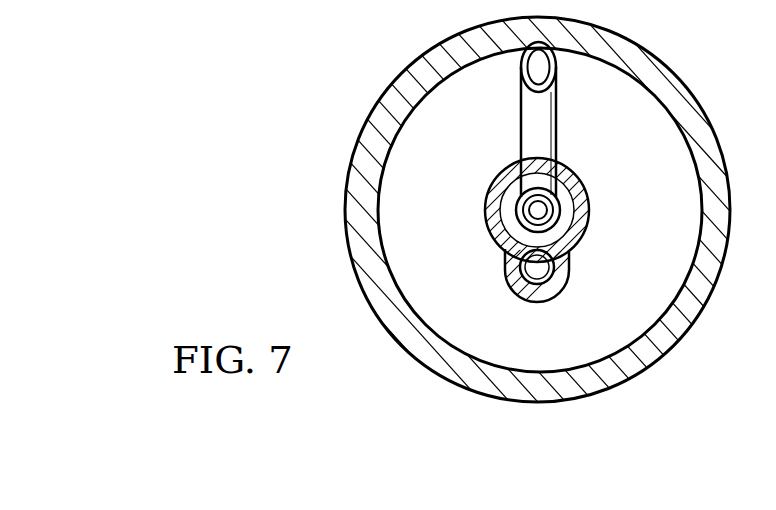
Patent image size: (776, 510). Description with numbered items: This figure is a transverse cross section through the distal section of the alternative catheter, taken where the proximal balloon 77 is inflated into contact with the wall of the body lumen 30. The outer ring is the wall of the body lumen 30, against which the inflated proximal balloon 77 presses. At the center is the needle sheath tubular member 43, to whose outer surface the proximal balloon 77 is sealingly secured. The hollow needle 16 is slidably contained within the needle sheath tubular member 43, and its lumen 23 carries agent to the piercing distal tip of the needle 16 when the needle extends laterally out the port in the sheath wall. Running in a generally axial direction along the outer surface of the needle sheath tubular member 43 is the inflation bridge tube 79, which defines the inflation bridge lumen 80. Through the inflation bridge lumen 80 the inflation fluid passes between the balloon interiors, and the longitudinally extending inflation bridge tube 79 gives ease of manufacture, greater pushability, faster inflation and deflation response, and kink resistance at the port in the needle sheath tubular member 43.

The body lumen 30 is at (656, 86).
The hollow needle 16 is at (536, 137).
The proximal balloon 77 is at (587, 203).
The needle sheath tubular member 43 is at (504, 219).
The lumen of the hollow needle 23 is at (560, 223).
The inflation bridge tube 79 is at (512, 279).
The inflation bridge lumen 80 is at (540, 270).